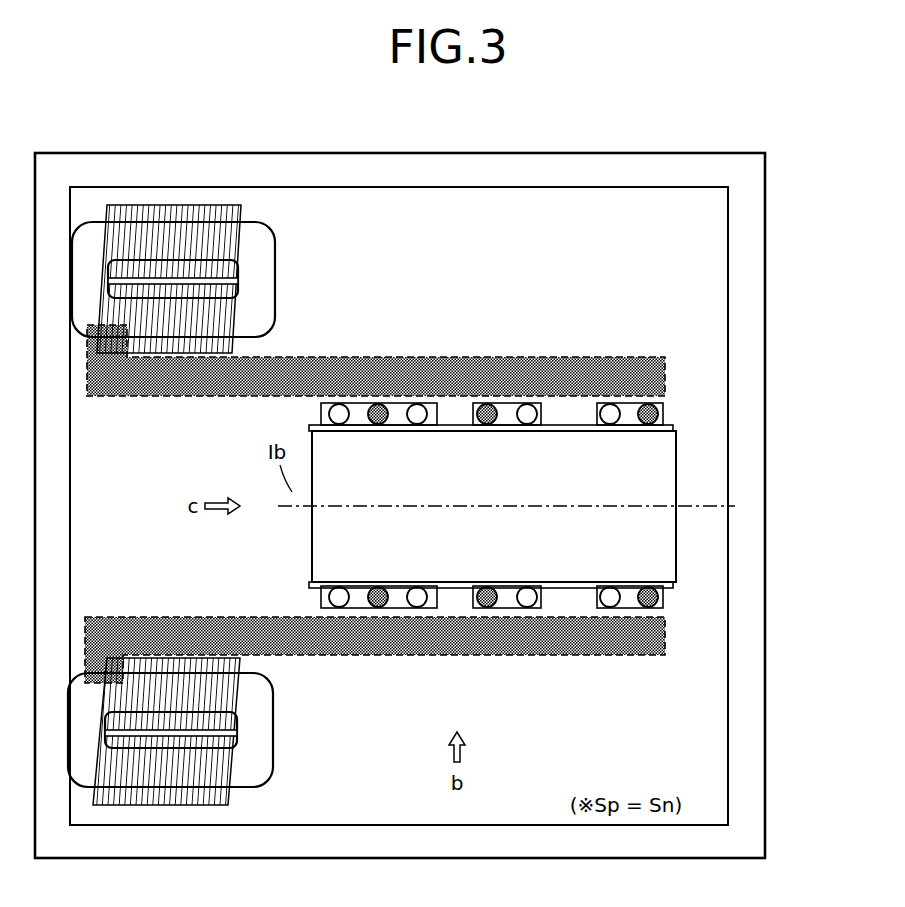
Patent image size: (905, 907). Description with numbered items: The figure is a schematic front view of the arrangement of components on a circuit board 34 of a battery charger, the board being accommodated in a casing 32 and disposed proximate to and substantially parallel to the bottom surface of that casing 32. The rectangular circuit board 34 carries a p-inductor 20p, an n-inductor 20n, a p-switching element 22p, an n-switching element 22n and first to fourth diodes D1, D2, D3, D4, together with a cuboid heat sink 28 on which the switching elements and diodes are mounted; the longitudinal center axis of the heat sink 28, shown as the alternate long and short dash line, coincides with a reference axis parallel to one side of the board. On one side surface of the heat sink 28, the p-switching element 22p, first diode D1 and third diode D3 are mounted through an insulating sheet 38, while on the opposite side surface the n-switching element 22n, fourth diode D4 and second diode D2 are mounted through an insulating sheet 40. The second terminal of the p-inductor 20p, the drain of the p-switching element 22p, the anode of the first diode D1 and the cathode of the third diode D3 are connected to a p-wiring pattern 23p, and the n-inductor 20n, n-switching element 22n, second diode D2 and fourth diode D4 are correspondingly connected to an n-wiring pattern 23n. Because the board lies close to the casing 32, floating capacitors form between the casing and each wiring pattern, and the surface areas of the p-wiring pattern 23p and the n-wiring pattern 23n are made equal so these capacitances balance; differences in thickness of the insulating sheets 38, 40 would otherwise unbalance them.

The p-inductor 20p is at (240, 238).
The n-inductor 20n is at (240, 690).
The p-switching element 22p is at (358, 403).
The n-switching element 22n is at (357, 608).
The p-wiring pattern 23p is at (205, 398).
The n-wiring pattern 23n is at (205, 617).
The heat sink 28 is at (676, 487).
The casing 32 is at (693, 168).
The circuit board 34 is at (628, 200).
The insulating sheet 38 is at (668, 426).
The insulating sheet 40 is at (668, 588).
The first diode D1 is at (487, 403).
The second diode D2 is at (625, 610).
The third diode D3 is at (624, 403).
The fourth diode D4 is at (505, 608).